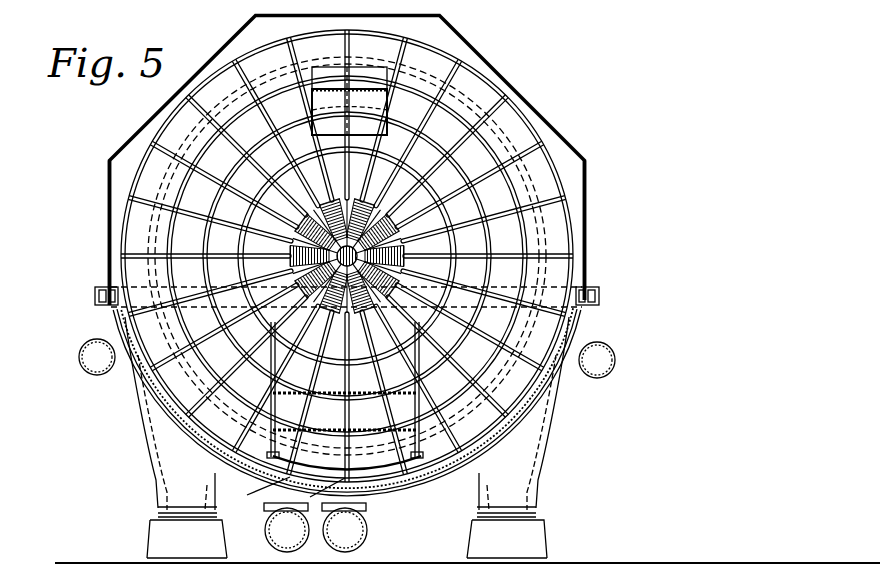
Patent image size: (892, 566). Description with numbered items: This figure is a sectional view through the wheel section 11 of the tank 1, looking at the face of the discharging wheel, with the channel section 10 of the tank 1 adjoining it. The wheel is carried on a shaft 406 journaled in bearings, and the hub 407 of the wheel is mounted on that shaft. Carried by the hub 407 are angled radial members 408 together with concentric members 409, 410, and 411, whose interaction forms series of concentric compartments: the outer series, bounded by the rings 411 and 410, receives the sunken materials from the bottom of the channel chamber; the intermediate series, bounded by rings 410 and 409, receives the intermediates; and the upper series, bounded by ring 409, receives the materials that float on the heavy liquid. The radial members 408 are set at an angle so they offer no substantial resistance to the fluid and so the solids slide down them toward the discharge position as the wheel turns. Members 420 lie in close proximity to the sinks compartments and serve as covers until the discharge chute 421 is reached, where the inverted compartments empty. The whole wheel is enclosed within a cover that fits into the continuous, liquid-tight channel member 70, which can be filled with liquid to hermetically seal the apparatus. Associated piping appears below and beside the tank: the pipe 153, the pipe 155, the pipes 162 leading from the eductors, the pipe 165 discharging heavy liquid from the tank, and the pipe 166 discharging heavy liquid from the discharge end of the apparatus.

The tank 1 is at (512, 80).
The channel section of the tank 10 is at (256, 486).
The wheel section of the tank 11 is at (584, 240).
The channel member 70 is at (94, 296).
The pipe 153 is at (368, 538).
The pipe 155 is at (277, 539).
The pipes leading from the eductors 162 is at (78, 357).
The pipe discharging heavy liquid from the tank 165 is at (382, 498).
The pipe discharging heavy liquid from the discharge end 166 is at (243, 437).
The shaft 406 is at (355, 249).
The hub of the wheel 407 is at (383, 206).
The radial members 408 is at (447, 148).
The concentric member 409 is at (478, 201).
The concentric member 410 is at (530, 187).
The concentric member 411 is at (563, 185).
The members 420 is at (590, 214).
The discharge chute 421 is at (389, 115).